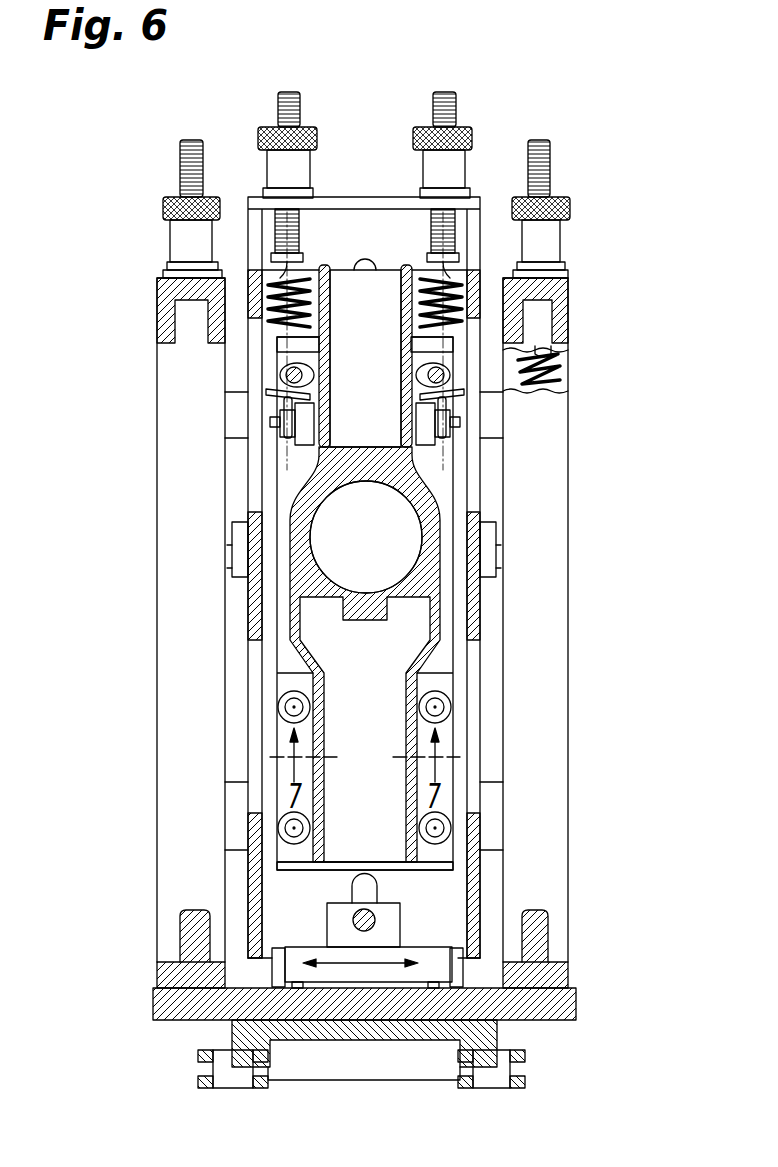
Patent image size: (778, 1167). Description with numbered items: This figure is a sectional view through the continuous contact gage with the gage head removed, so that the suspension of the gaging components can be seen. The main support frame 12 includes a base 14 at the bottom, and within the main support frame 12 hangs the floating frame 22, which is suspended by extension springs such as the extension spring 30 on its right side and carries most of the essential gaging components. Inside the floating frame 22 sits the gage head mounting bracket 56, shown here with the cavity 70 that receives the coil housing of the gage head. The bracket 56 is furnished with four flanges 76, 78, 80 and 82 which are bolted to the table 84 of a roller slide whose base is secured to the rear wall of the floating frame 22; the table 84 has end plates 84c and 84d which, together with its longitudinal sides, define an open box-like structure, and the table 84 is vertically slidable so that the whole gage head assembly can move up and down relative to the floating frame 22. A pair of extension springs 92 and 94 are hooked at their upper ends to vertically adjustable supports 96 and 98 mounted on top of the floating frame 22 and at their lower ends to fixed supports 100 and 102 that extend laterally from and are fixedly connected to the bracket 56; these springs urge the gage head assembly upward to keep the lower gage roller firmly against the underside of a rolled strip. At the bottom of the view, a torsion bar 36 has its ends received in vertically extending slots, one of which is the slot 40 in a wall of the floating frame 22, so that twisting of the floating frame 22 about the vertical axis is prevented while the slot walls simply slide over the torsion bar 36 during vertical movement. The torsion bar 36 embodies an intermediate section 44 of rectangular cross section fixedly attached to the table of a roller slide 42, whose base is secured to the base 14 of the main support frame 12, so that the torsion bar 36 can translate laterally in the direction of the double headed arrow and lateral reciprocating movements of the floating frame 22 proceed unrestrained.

The main support frame 12 is at (168, 583).
The floating frame 22 is at (483, 602).
The base 14 is at (556, 1003).
The extension spring 30 is at (550, 377).
The torsion bar 36 is at (375, 927).
The slot 40 is at (365, 882).
The roller slide 42 is at (294, 957).
The intermediate section 44 is at (387, 910).
The gage head mounting bracket 56 is at (423, 567).
The cavity 70 is at (332, 498).
The flange 76 is at (299, 680).
The flange 78 is at (430, 680).
The flange 80 is at (429, 352).
The flange 82 is at (402, 340).
The table 84 is at (384, 750).
The end plate 84c is at (281, 340).
The end plate 84d is at (445, 862).
The extension spring 92 is at (302, 278).
The extension spring 94 is at (422, 277).
The vertically adjustable support 96 is at (297, 184).
The vertically adjustable support 98 is at (455, 165).
The fixed support 100 is at (299, 418).
The fixed support 102 is at (445, 418).